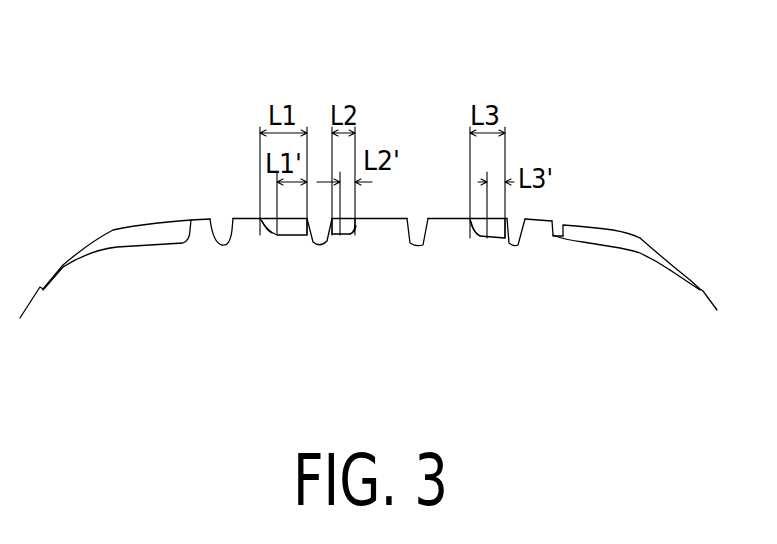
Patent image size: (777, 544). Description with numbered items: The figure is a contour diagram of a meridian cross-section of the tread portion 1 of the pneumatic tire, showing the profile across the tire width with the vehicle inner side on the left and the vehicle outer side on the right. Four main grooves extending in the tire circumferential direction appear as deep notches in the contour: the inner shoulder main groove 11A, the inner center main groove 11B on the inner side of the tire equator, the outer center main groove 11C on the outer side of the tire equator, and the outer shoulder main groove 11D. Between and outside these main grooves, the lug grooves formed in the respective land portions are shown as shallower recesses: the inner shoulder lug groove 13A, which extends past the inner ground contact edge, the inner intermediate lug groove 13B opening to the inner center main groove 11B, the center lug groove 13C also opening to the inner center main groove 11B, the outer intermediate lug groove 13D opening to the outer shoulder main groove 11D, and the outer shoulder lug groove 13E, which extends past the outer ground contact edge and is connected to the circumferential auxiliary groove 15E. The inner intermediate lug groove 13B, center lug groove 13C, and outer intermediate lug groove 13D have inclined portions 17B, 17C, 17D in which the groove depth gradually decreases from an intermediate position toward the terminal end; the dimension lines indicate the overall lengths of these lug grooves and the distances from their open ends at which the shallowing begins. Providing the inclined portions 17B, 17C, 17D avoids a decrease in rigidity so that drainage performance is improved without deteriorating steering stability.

The tread portion 1 is at (641, 236).
The inner shoulder main groove 11A is at (219, 240).
The inner center main groove 11B is at (322, 218).
The outer center main groove 11C is at (412, 217).
The outer shoulder main groove 11D is at (523, 233).
The inner shoulder lug groove 13A is at (123, 245).
The inner intermediate lug groove 13B is at (283, 242).
The center lug groove 13C is at (338, 240).
The outer intermediate lug groove 13D is at (500, 240).
The outer shoulder lug groove 13E is at (607, 245).
The circumferential auxiliary groove 15E is at (565, 230).
The inclined portion 17B is at (263, 230).
The inclined portion 17C is at (357, 233).
The inclined portion 17D is at (475, 238).